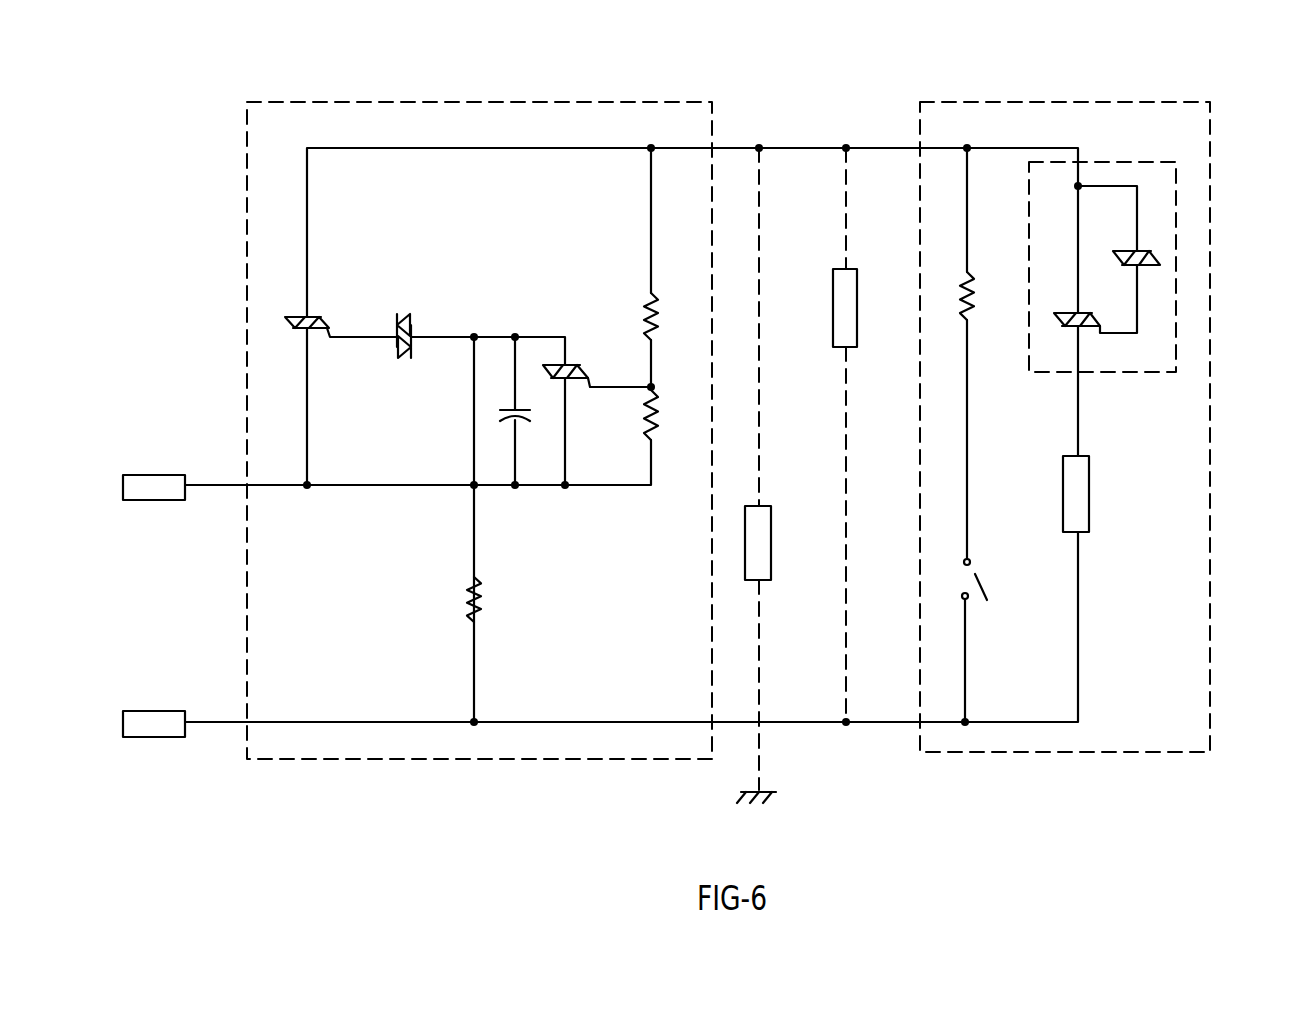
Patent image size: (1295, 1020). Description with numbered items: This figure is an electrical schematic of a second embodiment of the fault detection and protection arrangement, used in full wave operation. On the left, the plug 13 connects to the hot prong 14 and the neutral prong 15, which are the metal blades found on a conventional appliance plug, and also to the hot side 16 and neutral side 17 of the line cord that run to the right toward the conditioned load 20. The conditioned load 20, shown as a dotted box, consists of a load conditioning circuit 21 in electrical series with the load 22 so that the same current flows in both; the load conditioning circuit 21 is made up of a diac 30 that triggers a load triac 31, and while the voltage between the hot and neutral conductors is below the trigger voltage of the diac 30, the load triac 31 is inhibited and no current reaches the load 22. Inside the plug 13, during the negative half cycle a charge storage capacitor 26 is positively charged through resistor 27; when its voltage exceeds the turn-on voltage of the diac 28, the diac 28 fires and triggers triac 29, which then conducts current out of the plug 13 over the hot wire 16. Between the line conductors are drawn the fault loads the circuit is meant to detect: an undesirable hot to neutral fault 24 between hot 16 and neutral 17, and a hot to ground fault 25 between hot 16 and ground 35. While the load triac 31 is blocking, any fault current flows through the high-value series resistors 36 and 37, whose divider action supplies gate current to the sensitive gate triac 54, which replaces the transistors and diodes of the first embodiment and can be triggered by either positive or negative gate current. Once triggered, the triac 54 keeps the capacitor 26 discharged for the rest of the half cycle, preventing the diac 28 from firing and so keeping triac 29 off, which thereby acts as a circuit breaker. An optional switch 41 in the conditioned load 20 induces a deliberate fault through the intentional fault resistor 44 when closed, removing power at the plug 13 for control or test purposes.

The plug 13 is at (490, 101).
The hot prong 14 is at (163, 475).
The neutral prong 15 is at (168, 711).
The hot side of the line cord 16 is at (797, 148).
The neutral side of the line cord 17 is at (795, 720).
The conditioned load 20 is at (1010, 100).
The load conditioning circuit 21 is at (1113, 160).
The load 22 is at (1089, 470).
The hot to neutral fault 24 is at (836, 270).
The hot to ground fault 25 is at (768, 508).
The charge storage capacitor 26 is at (520, 418).
The resistor 27 is at (480, 592).
The diac 28 is at (410, 320).
The triac 29 is at (325, 315).
The diac 30 is at (1145, 258).
The load triac 31 is at (1070, 315).
The ground 35 is at (768, 798).
The resistor 36 is at (655, 305).
The resistor 37 is at (656, 420).
The switch 41 is at (977, 575).
The intentional fault resistor 44 is at (972, 292).
The sensitive gate triac 54 is at (575, 365).